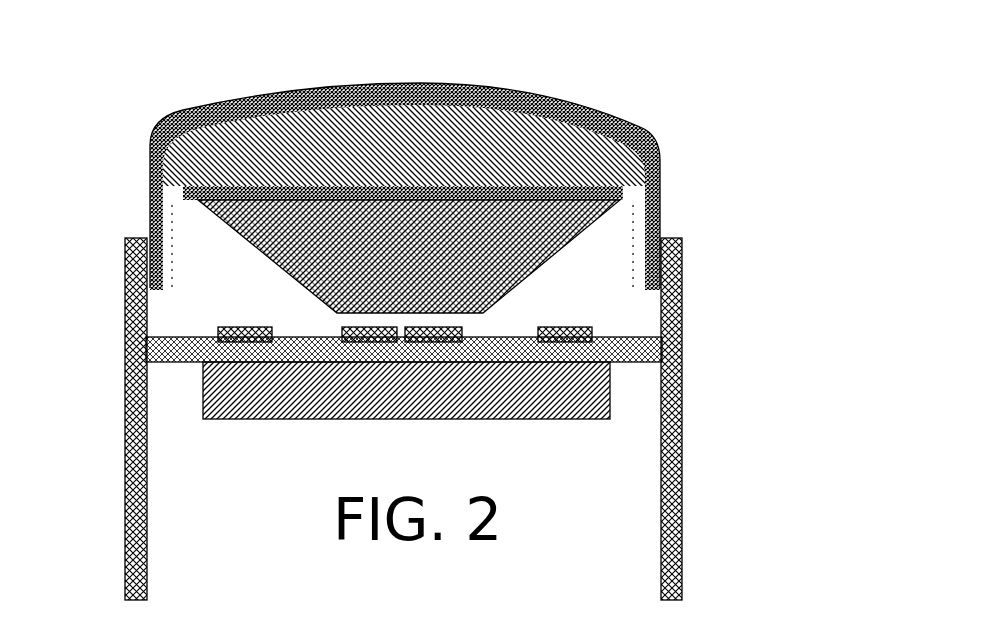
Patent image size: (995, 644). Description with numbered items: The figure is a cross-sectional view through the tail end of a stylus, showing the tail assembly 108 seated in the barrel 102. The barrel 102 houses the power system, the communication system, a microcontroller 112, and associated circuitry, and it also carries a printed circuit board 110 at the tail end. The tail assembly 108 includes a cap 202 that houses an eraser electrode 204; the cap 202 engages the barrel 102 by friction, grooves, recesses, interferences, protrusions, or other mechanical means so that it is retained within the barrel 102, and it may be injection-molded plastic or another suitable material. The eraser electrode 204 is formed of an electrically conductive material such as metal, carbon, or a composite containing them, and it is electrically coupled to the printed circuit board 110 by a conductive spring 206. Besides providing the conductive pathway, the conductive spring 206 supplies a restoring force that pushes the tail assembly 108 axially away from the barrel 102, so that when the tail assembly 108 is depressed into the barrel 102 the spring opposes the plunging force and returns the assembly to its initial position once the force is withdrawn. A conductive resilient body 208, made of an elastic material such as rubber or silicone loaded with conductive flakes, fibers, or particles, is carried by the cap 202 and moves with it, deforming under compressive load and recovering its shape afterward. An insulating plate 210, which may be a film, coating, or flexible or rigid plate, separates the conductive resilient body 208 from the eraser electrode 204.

The barrel 102 is at (672, 418).
The tail assembly 108 is at (232, 76).
The printed circuit board 110 is at (202, 347).
The microcontroller 112 is at (230, 420).
The cap 202 is at (547, 94).
The eraser electrode 204 is at (617, 142).
The conductive spring 206 is at (640, 250).
The conductive resilient body 208 is at (272, 240).
The insulating plate 210 is at (263, 188).